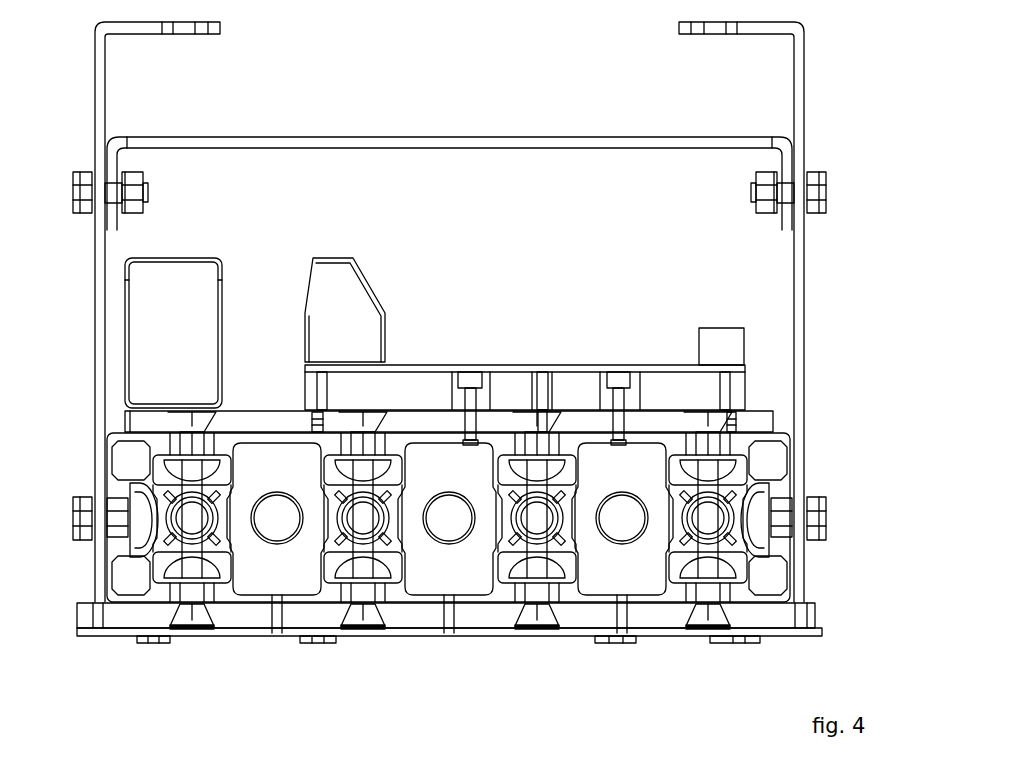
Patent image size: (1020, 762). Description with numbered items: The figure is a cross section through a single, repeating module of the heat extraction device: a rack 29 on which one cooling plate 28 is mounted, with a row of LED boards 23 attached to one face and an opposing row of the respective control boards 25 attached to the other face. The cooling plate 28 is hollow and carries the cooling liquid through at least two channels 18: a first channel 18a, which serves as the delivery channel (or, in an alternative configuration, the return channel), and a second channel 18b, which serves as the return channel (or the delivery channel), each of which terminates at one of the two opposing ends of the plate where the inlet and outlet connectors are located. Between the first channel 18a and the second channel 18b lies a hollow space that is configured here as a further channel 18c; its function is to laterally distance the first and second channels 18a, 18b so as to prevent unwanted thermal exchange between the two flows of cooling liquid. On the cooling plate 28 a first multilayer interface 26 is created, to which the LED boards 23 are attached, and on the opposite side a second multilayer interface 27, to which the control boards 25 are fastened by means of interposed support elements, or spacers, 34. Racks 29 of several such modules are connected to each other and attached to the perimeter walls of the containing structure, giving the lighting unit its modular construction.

The channels 18 is at (648, 463).
The first channel 18a is at (265, 592).
The second channel 18b is at (607, 590).
The further channel 18c is at (442, 590).
The LED boards 23 is at (797, 650).
The control boards 25 is at (493, 357).
The first multilayer interface 26 is at (76, 615).
The second multilayer interface 27 is at (112, 421).
The cooling plate 28 is at (792, 426).
The rack 29 is at (805, 100).
The support elements 34 is at (345, 390).